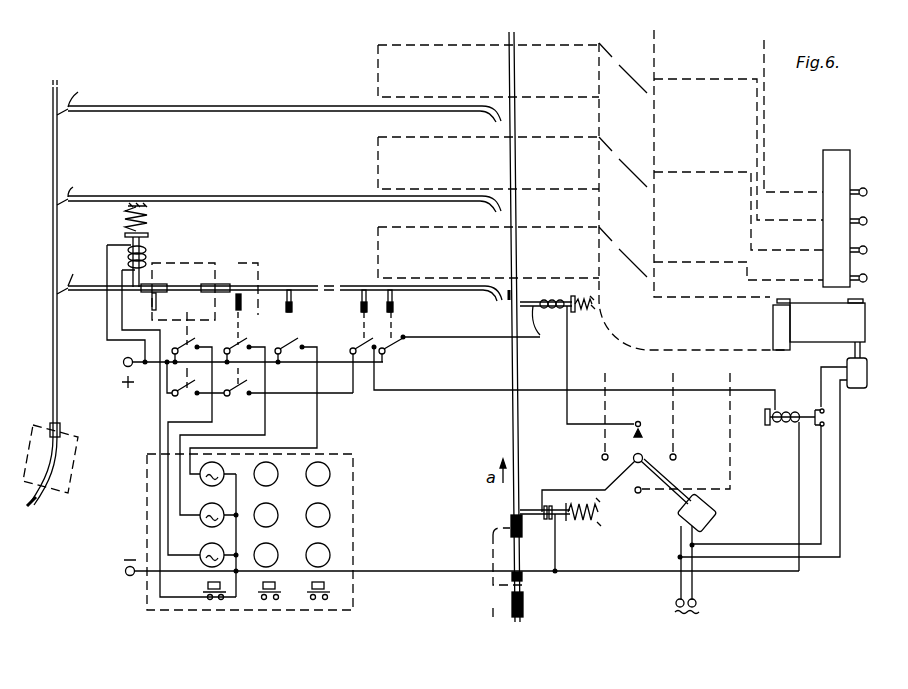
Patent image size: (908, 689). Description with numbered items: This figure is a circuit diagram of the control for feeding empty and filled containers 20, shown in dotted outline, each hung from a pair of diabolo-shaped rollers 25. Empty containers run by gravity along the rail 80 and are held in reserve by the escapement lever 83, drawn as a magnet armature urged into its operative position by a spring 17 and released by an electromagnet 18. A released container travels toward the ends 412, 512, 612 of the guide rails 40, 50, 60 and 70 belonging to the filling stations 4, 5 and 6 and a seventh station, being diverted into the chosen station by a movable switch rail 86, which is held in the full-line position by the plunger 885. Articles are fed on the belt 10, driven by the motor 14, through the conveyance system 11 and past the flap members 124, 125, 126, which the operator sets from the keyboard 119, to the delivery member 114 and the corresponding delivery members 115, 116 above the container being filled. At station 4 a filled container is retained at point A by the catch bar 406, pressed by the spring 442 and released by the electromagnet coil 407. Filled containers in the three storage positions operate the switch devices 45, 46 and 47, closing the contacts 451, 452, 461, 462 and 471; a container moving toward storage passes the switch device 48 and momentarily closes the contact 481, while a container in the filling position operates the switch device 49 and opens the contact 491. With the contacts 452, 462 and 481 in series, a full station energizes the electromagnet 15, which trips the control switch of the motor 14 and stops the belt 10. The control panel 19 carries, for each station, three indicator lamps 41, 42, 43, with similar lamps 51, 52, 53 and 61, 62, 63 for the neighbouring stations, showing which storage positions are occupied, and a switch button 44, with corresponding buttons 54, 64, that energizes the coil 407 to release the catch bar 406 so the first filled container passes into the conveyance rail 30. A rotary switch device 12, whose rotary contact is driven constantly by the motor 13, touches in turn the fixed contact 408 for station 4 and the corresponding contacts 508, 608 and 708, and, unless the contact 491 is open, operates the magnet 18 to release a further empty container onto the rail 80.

The conveyance rail 30 is at (53, 177).
The rod end 612 is at (89, 95).
The guide rail 60 is at (240, 108).
The rod end 512 is at (84, 187).
The guide rail 50 is at (244, 200).
The guide rail 40 is at (312, 285).
The rod end 412 is at (77, 271).
The spring 442 is at (143, 222).
The electromagnet coil 407 is at (148, 260).
The catch bar 406 is at (130, 272).
The container 20 is at (213, 262).
The switch device 45 is at (156, 336).
The switch device 46 is at (233, 336).
The switch device 47 is at (301, 301).
The additional switch device 48 is at (362, 291).
The further switch device 49 is at (398, 300).
The contact 451 is at (198, 441).
The second contact 452 is at (195, 388).
The contact 461 is at (231, 421).
The second contact 462 is at (288, 397).
The switch contact 471 is at (263, 401).
The switch contact 481 is at (360, 336).
The switch contact 491 is at (392, 336).
The control panel 19 is at (354, 536).
The indicator lamp 41 is at (203, 550).
The indicator lamp 42 is at (206, 511).
The indicator lamp 43 is at (222, 471).
The indicator lamp 51 is at (277, 555).
The indicator lamp 52 is at (277, 515).
The indicator lamp 53 is at (277, 474).
The indicator lamp 61 is at (329, 555).
The indicator lamp 62 is at (329, 515).
The indicator lamp 63 is at (329, 474).
The control switch button 44 is at (205, 588).
The control switch button 54 is at (281, 589).
The control switch button 64 is at (329, 589).
The filling station 6 is at (464, 64).
The filling station 5 is at (466, 155).
The filling station 4 is at (466, 243).
The gear block 116 is at (488, 71).
The gear block 115 is at (488, 163).
The delivery member 114 is at (488, 252).
The conveyance system 11 is at (735, 308).
The flap member 126 is at (711, 131).
The flap member 125 is at (711, 193).
The flap member 124 is at (711, 251).
The keyboard 119 is at (846, 180).
The conveyor belt 10 is at (856, 321).
The motor 14 is at (868, 376).
The electromagnet 15 is at (758, 490).
The rail 80 is at (510, 421).
The escapement lever 83 is at (523, 505).
The switch rail 86 is at (509, 347).
The plunger 885 is at (557, 329).
The fixed contact 408 is at (612, 371).
The guide rail 70 is at (607, 403).
The terminal 708 is at (588, 458).
The terminal 508 is at (689, 458).
The terminal 608 is at (642, 499).
The rotary switch device 12 is at (654, 464).
The motor 13 is at (703, 508).
The electromagnet 18 is at (552, 520).
The spring 17 is at (590, 522).
The diabolo-shaped rollers 25 is at (509, 613).